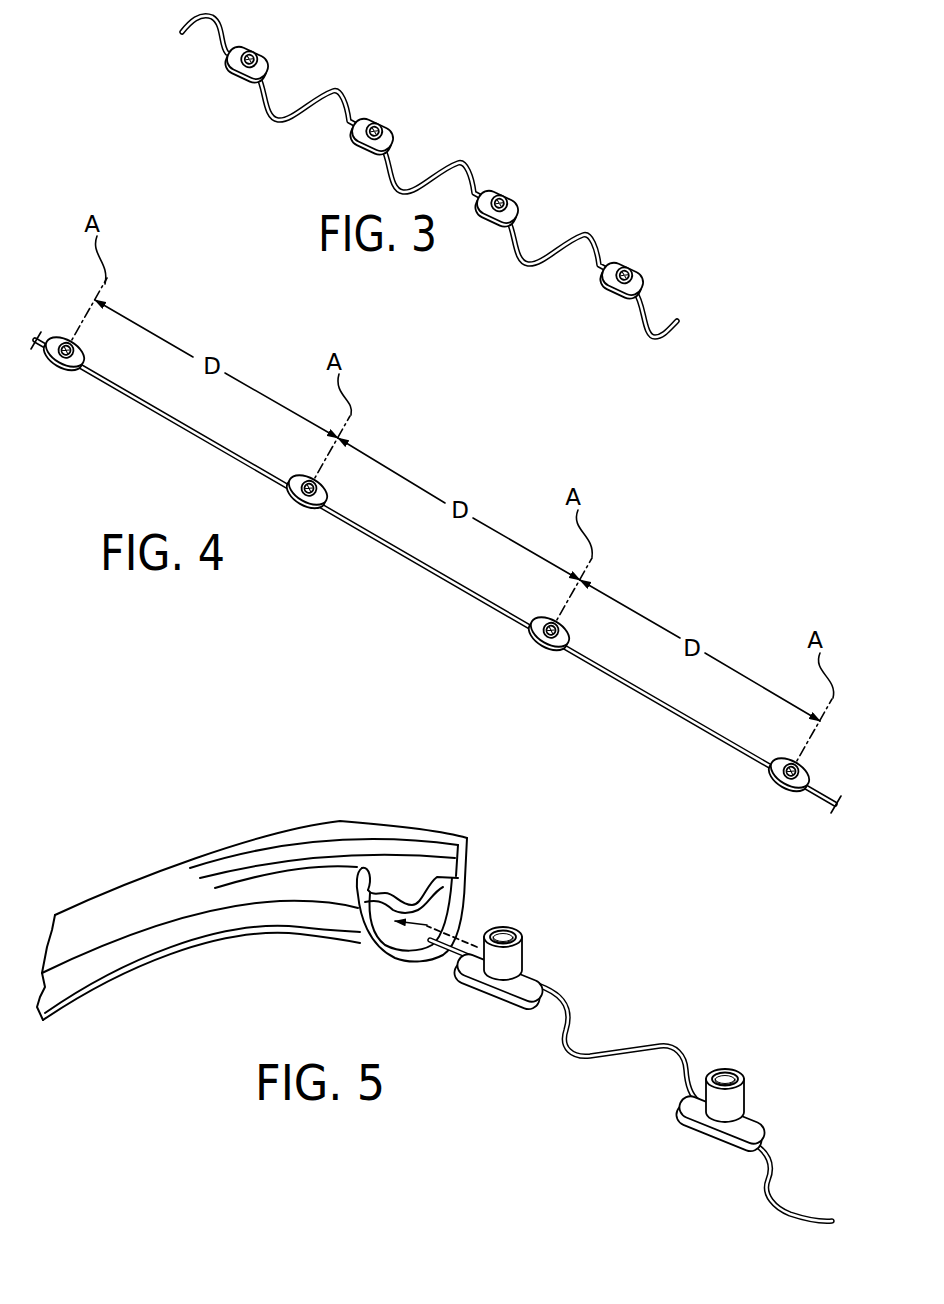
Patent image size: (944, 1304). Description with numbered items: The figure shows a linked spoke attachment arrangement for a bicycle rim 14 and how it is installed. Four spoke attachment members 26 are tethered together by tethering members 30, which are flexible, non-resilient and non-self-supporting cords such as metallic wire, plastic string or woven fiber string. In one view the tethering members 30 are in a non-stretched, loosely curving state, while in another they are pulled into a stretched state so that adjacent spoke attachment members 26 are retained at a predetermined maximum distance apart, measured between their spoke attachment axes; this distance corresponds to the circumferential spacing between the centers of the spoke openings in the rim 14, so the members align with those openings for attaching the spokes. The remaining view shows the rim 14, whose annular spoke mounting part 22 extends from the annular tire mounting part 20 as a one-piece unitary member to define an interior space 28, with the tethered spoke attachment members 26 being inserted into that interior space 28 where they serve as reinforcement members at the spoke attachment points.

In FIG. 5, the rim 14 is at (193, 832).
In FIG. 5, the annular tire mounting part 20 is at (353, 820).
In FIG. 5, the annular spoke mounting part 22 is at (242, 940).
In FIG. 3, the spoke attachment member 26 is at (268, 56).
In FIG. 4, the spoke attachment member 26 is at (65, 378).
In FIG. 5, the spoke attachment member 26 is at (543, 955).
In FIG. 5, the interior space 28 is at (433, 903).
In FIG. 3, the tethering member 30 is at (212, 30).
In FIG. 4, the tethering member 30 is at (44, 338).
In FIG. 5, the tethering member 30 is at (440, 958).